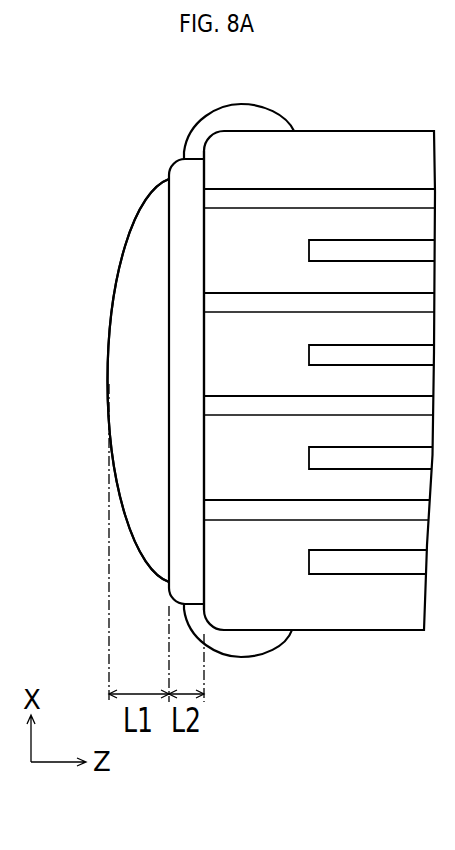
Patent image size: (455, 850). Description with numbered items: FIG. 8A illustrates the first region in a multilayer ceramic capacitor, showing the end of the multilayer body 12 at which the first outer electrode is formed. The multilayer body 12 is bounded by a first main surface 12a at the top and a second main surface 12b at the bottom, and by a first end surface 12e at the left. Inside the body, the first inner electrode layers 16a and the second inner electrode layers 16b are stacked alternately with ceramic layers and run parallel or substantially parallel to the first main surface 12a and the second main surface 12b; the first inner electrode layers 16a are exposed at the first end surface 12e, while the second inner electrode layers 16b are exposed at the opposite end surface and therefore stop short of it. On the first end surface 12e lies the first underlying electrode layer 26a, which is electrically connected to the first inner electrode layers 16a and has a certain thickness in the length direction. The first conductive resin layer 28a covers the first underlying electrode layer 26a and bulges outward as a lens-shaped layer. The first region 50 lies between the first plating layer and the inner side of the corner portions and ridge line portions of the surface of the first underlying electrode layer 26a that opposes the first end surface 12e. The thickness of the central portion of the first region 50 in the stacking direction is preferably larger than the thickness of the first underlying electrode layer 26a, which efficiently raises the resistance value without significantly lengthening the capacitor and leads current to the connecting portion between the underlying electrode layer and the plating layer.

The multilayer body 12 is at (343, 129).
The first main surface 12a is at (303, 129).
The second main surface 12b is at (320, 630).
The first end surface 12e is at (203, 225).
The first inner electrode layers 16a is at (370, 298).
The second inner electrode layers 16b is at (367, 453).
The first underlying electrode layer 26a is at (182, 298).
The first conductive resin layer 28a is at (145, 345).
The first region 50 is at (142, 393).